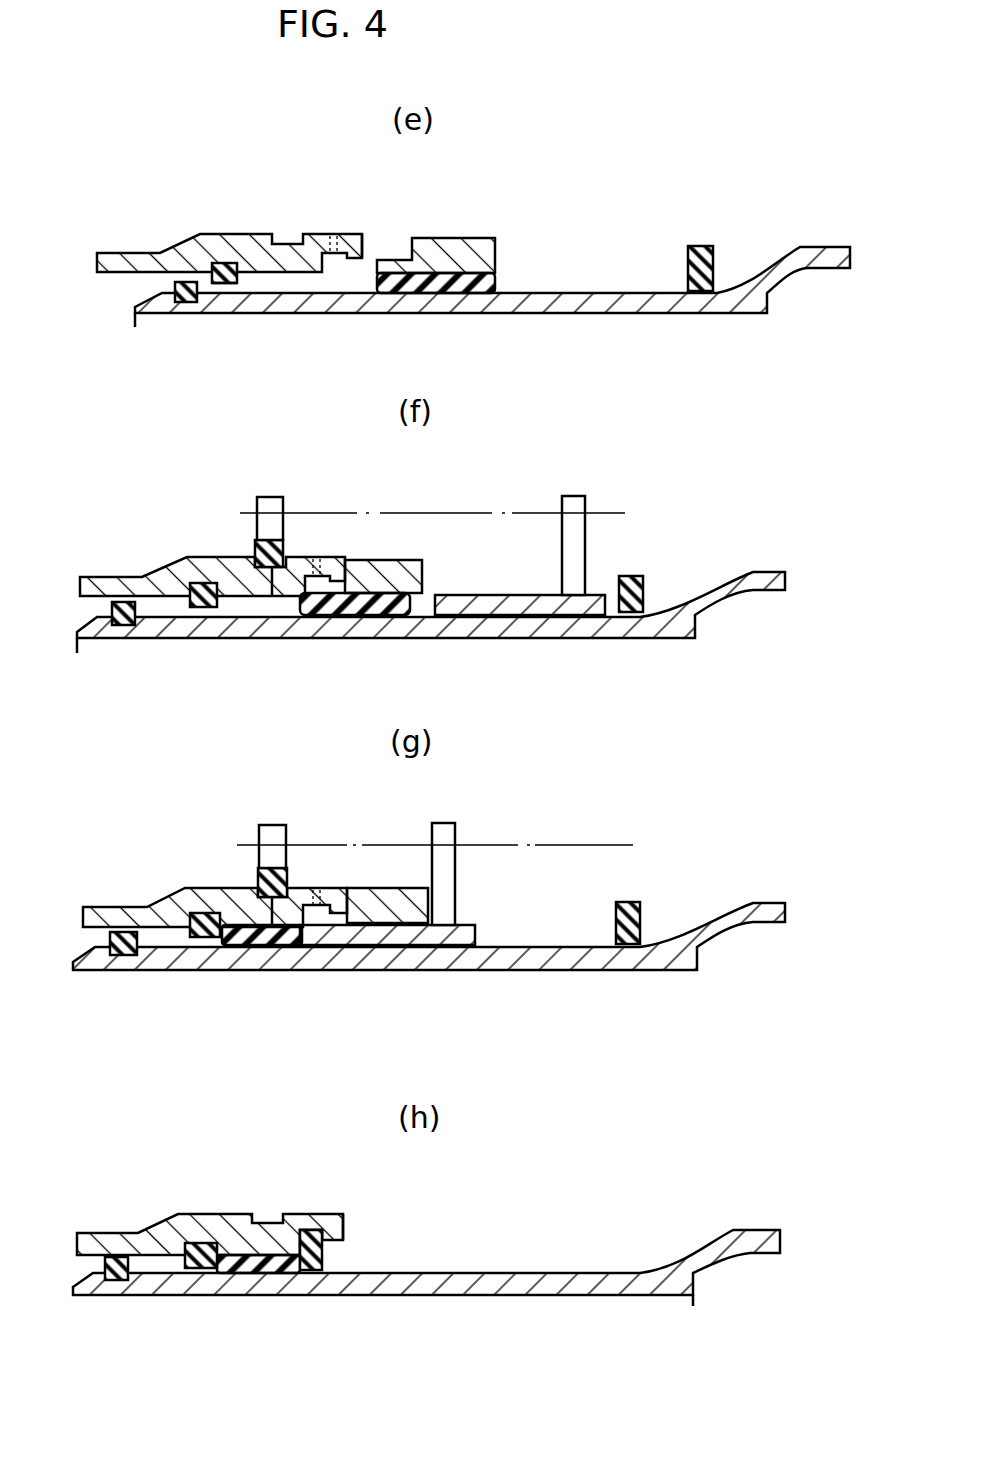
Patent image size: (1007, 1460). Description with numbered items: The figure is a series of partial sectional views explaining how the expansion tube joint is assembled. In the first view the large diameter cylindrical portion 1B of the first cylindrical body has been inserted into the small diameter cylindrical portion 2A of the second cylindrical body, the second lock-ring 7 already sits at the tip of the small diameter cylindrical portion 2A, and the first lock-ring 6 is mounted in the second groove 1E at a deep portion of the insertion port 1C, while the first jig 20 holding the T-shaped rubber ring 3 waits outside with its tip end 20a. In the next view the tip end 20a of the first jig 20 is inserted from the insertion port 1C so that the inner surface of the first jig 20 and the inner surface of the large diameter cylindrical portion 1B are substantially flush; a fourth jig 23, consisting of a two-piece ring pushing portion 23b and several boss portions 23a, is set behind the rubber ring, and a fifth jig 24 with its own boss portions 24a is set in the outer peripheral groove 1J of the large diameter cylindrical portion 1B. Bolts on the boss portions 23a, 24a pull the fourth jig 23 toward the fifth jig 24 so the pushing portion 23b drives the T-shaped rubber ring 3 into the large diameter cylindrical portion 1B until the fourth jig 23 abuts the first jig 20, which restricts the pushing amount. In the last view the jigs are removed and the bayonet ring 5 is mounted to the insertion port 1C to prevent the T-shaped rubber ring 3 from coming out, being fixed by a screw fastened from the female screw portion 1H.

The large diameter cylindrical portion 1B is at (244, 232).
The insertion port 1C is at (369, 229).
The second groove 1E is at (219, 262).
The female screw portion 1H is at (312, 1228).
The outer peripheral groove 1J is at (272, 580).
The small diameter cylindrical portion 2A is at (568, 1272).
The T-shaped rubber ring 3 is at (450, 284).
The bayonet ring 5 is at (708, 245).
The first lock-ring 6 is at (226, 283).
The second lock-ring 7 is at (186, 304).
The first jig 20 is at (412, 560).
The tip end of first jig 20a is at (390, 262).
The fourth jig 23 is at (478, 735).
The boss portions 23a is at (578, 497).
The pushing portion 23b is at (515, 596).
The fifth jig 24 is at (251, 540).
The boss portions 24a is at (278, 500).